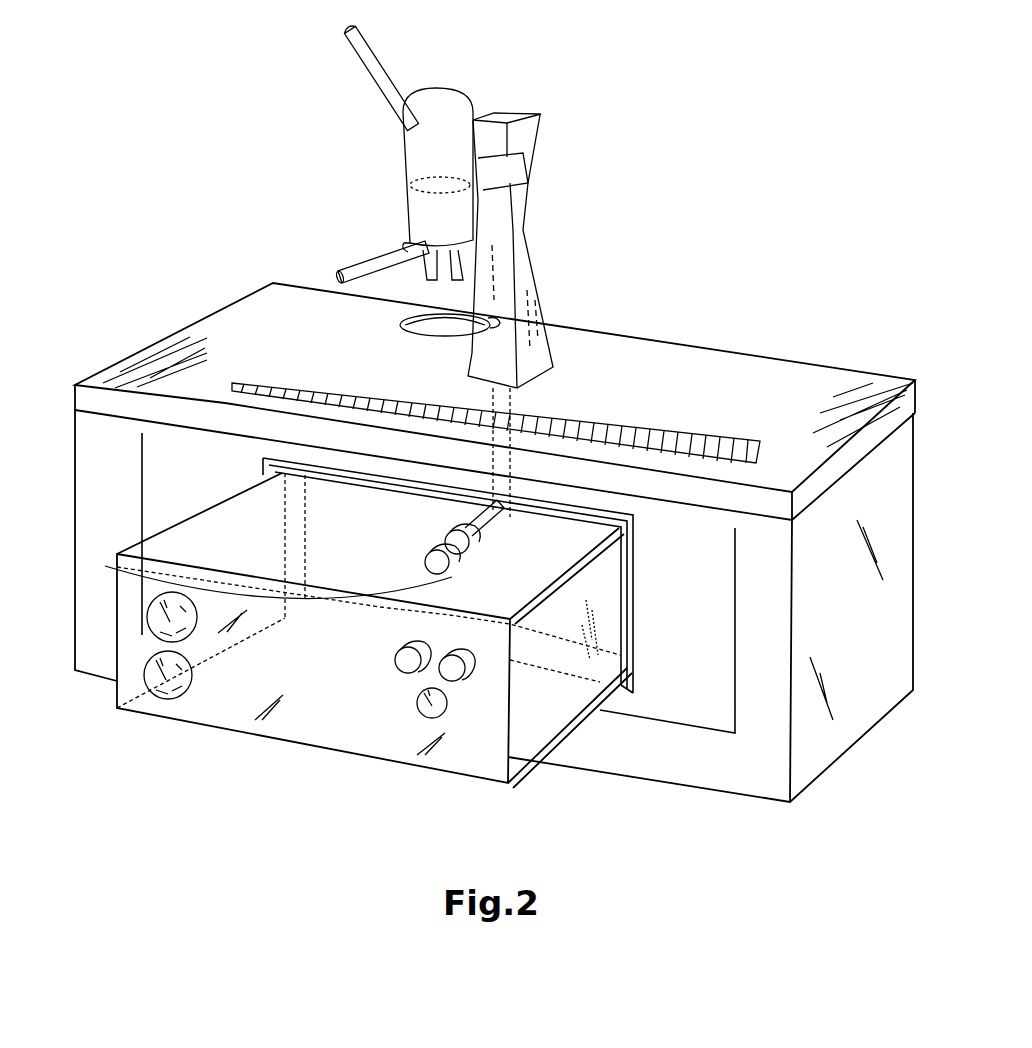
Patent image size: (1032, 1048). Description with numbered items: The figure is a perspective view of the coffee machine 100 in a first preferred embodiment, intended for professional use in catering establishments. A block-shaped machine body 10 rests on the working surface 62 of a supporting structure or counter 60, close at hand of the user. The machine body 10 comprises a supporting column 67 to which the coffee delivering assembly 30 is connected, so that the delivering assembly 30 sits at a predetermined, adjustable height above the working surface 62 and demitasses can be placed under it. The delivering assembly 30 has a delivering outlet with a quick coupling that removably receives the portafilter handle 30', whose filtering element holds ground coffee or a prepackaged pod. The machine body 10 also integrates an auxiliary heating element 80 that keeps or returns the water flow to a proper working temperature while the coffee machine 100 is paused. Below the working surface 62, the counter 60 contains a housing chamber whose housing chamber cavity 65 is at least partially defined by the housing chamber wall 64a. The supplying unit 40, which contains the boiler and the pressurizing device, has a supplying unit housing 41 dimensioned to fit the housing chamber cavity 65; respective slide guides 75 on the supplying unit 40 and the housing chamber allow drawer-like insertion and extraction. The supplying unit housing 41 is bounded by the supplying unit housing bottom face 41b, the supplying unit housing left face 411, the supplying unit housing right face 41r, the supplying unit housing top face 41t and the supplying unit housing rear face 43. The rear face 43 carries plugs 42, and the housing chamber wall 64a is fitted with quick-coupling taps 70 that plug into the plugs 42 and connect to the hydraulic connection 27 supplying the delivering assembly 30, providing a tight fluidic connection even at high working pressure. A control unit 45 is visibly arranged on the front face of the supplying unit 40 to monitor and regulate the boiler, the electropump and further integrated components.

The coffee machine 100 is at (778, 63).
The machine body 10 is at (442, 105).
The auxiliary heating element 80 is at (407, 185).
The coffee delivering assembly 30 is at (378, 132).
The portafilter handle 30' is at (369, 259).
The supporting column 67 is at (522, 262).
The hydraulic connection 27 is at (493, 460).
The working surface 62 is at (687, 362).
The supporting structure or counter 60 is at (884, 352).
The housing chamber wall 64a is at (319, 513).
The housing chamber cavity 65 is at (263, 470).
The supplying unit housing rear face 43 is at (310, 504).
The supplying unit housing left face 411 is at (167, 555).
The plugs 42 is at (117, 567).
The supplying unit housing top face 41t is at (398, 555).
The supplying unit 40 is at (224, 706).
The supplying unit housing 41 is at (343, 761).
The supplying unit housing bottom face 41b is at (387, 760).
The control unit 45 is at (464, 700).
The supplying unit housing right face 41r is at (556, 714).
The slide guides 75 is at (527, 627).
The quick-coupling taps 70 is at (483, 538).